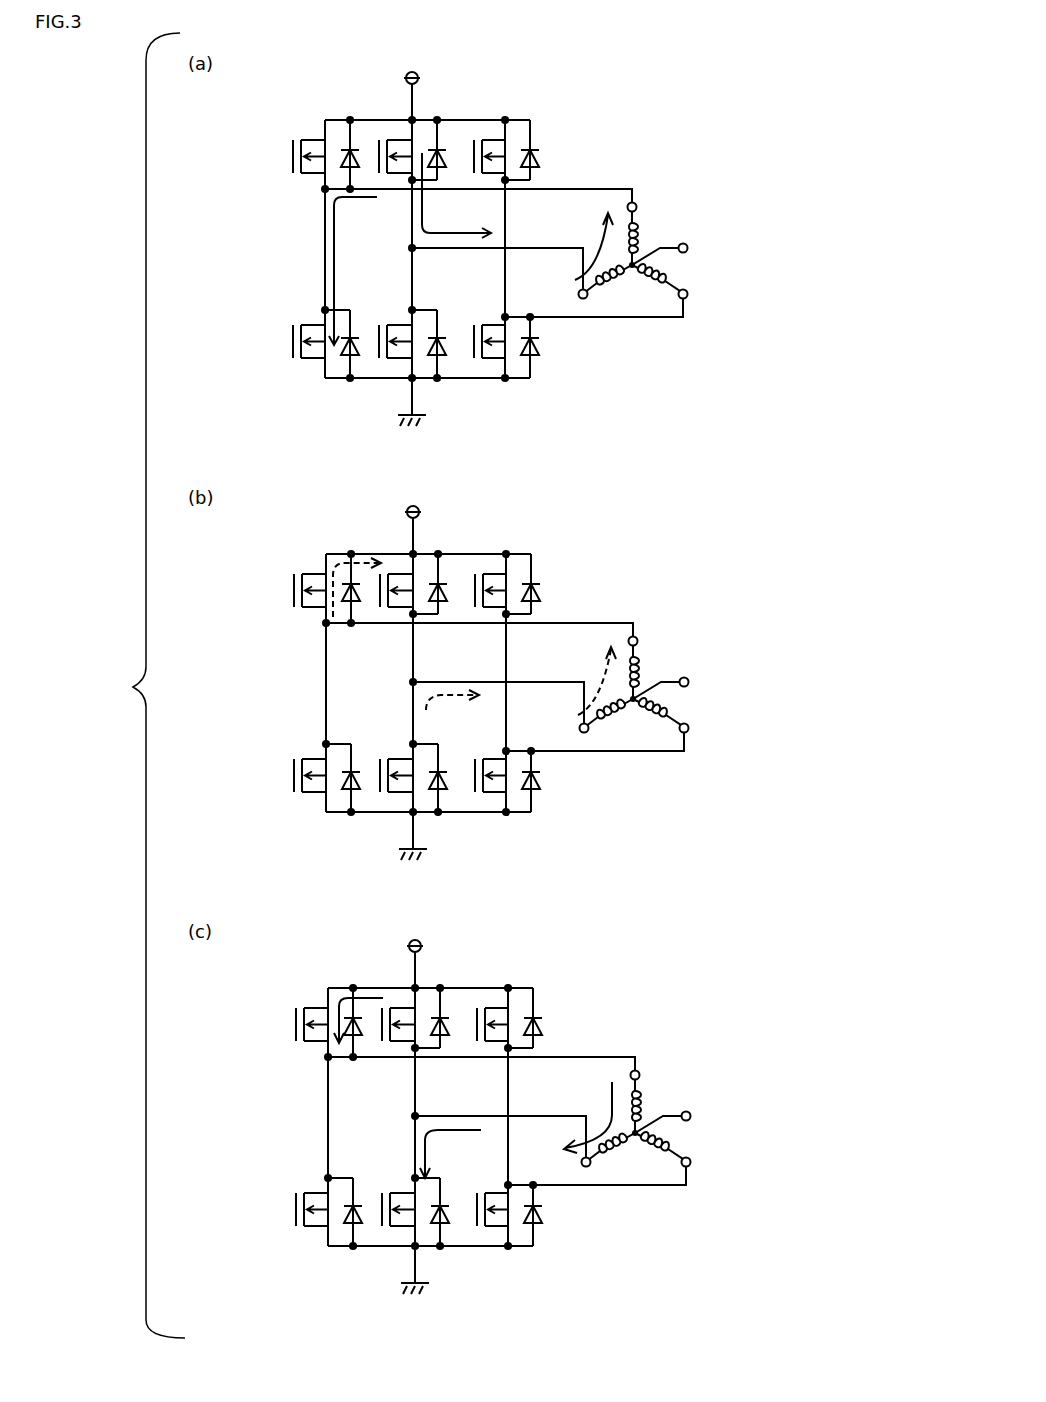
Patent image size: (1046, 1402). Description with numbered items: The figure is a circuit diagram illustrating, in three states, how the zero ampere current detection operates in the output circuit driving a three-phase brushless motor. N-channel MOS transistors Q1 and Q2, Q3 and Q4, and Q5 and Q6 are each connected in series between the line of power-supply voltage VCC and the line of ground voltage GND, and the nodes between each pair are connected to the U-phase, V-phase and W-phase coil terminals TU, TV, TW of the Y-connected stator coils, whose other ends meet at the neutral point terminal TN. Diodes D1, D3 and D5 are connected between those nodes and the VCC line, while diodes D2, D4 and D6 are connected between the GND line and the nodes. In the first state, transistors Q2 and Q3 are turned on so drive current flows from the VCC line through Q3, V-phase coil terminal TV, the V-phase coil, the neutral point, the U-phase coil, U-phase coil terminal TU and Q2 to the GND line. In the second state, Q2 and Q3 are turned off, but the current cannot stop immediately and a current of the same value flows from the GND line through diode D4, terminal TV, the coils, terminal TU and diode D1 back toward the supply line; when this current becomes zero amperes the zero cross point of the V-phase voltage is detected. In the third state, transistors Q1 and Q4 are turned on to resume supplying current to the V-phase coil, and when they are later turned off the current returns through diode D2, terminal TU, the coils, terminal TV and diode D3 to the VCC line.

The N-channel MOS transistor Q1 is at (292, 146).
The N-channel MOS transistor Q2 is at (292, 352).
The N-channel MOS transistor Q3 is at (380, 143).
The N-channel MOS transistor Q4 is at (378, 359).
The N-channel MOS transistor Q5 is at (474, 143).
The N-channel MOS transistor Q6 is at (474, 359).
The diode D1 is at (340, 149).
The diode D2 is at (353, 340).
The diode D3 is at (441, 151).
The diode D4 is at (443, 340).
The diode D5 is at (541, 157).
The diode D6 is at (541, 345).
The power-supply voltage VCC is at (410, 518).
The ground voltage GND is at (415, 849).
The U-phase coil terminal TU is at (637, 207).
The V-phase coil terminal TV is at (578, 294).
The W-phase coil terminal TW is at (688, 294).
The neutral point terminal TN is at (688, 248).